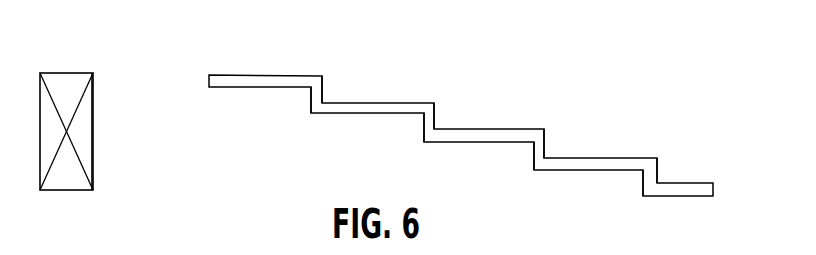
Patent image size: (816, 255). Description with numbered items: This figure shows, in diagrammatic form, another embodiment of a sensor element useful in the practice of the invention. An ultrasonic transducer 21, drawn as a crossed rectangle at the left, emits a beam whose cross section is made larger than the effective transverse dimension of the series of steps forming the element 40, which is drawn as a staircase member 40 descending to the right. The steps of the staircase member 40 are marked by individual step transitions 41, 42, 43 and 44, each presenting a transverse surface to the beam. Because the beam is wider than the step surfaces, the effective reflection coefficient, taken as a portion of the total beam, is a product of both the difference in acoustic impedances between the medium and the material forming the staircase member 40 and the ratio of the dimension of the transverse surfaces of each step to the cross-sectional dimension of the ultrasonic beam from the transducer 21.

The transducer 21 is at (73, 73).
The staircase member 40 is at (518, 113).
The first step 41 is at (316, 93).
The second step 42 is at (426, 122).
The third step 43 is at (538, 150).
The fourth step 44 is at (650, 178).